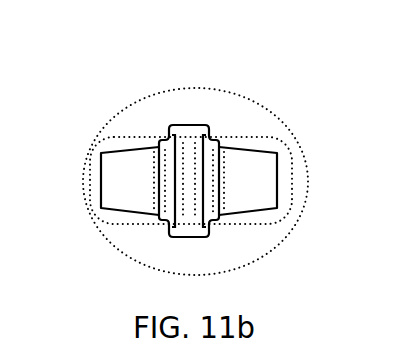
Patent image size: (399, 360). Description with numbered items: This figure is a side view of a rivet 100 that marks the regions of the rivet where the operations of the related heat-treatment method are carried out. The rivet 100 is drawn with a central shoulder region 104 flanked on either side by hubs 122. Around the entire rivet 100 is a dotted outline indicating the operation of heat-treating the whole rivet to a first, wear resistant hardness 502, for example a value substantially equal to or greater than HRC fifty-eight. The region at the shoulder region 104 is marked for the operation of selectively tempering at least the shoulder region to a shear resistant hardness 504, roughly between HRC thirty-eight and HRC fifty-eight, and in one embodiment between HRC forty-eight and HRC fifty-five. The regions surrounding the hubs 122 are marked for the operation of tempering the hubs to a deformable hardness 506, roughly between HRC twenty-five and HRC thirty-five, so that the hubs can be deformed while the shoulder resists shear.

The rivet 100 is at (262, 187).
The shoulder region 104 is at (166, 140).
The hubs 122 is at (116, 157).
The heat-treating the entire rivet to a first hardness 502 is at (213, 88).
The selectively tempering the shoulder region to a shear resistant hardness 504 is at (160, 141).
The tempering the hubs to a deformable hardness 506 is at (120, 223).